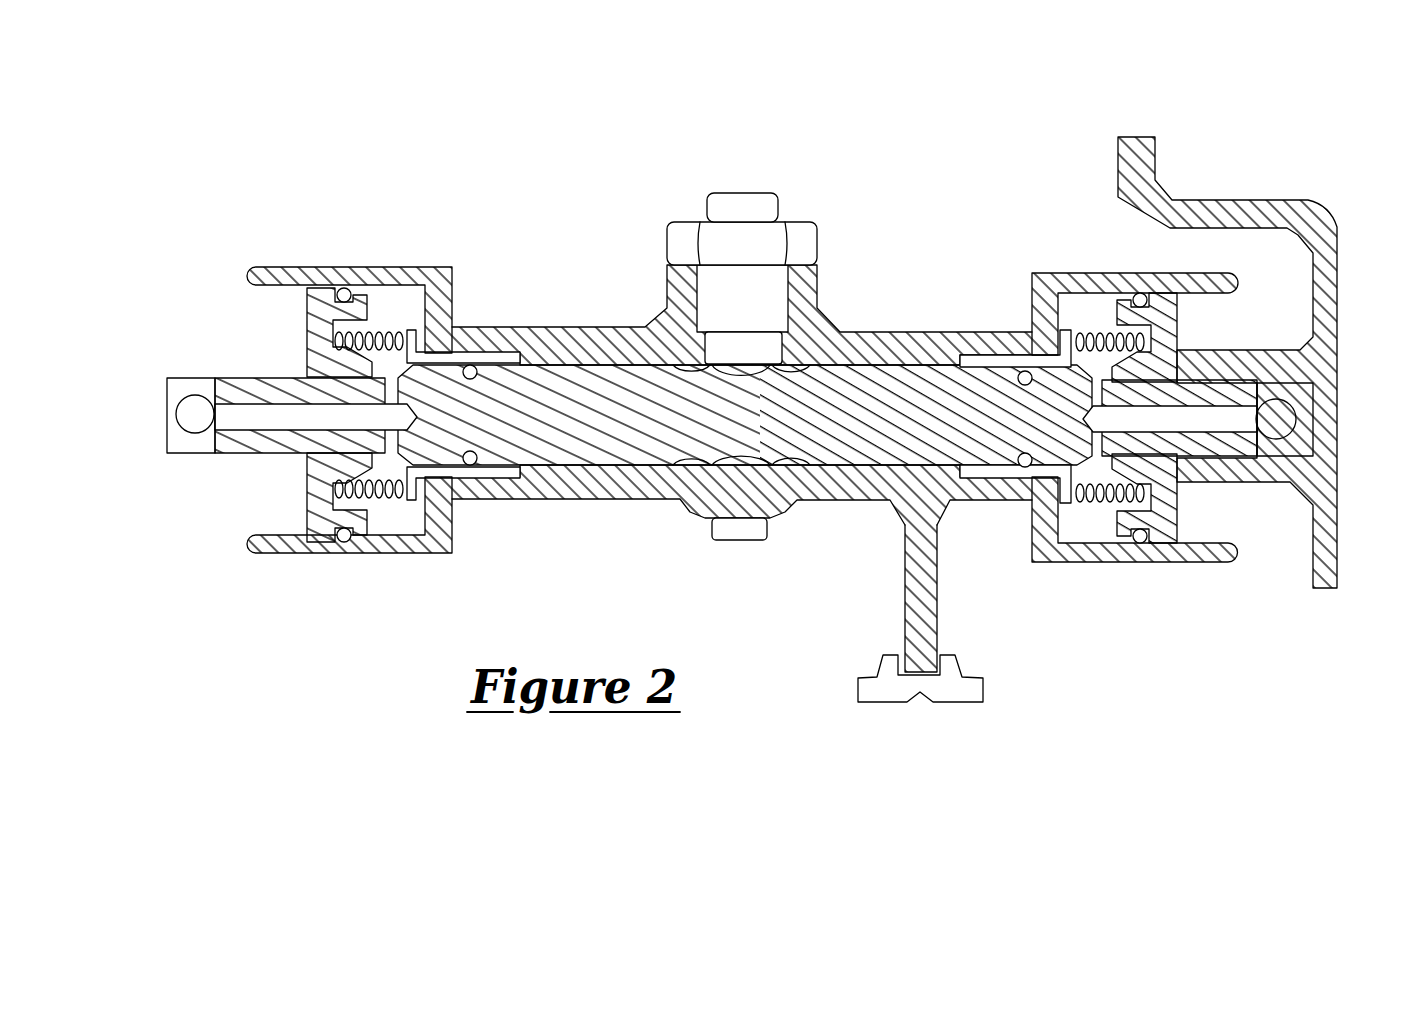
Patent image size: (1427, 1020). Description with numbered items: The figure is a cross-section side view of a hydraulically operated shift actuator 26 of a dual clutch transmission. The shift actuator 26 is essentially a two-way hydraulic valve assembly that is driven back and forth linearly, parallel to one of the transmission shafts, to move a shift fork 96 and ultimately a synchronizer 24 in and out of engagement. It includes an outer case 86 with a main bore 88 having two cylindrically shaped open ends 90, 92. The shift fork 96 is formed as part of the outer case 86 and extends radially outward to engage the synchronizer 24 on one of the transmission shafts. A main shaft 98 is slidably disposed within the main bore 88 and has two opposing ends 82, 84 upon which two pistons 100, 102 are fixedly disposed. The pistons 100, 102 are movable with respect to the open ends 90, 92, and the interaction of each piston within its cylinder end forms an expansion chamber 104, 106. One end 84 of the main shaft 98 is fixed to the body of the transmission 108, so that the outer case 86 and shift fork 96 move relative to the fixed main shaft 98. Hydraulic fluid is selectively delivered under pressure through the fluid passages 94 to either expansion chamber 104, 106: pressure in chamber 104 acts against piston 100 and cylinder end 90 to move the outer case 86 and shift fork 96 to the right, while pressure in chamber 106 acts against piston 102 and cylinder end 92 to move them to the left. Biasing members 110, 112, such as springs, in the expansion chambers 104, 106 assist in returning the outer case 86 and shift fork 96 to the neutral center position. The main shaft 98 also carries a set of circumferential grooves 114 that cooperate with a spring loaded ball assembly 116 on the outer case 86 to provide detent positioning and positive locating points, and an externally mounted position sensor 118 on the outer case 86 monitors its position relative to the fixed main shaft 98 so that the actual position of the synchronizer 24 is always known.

The synchronizer 24 is at (975, 680).
The shift actuator 26 is at (538, 242).
The end of main shaft 82 is at (292, 448).
The end of main shaft 84 is at (1315, 500).
The outer case 86 is at (640, 505).
The main bore 88 is at (825, 462).
The cylindrically shaped open end 90 is at (290, 537).
The cylindrically shaped open end 92 is at (1215, 533).
The fluid passage 94 is at (195, 413).
The shift fork 96 is at (937, 612).
The main shaft 98 is at (900, 382).
The piston 100 is at (318, 325).
The piston 102 is at (1178, 325).
The expansion chamber 104 is at (385, 522).
The expansion chamber 106 is at (1105, 530).
The body of the transmission 108 is at (1118, 180).
The biasing member 110 is at (418, 505).
The biasing member 112 is at (1180, 505).
The circumferential grooves 114 is at (692, 322).
The spring loaded ball assembly 116 is at (773, 293).
The position sensor 118 is at (728, 538).